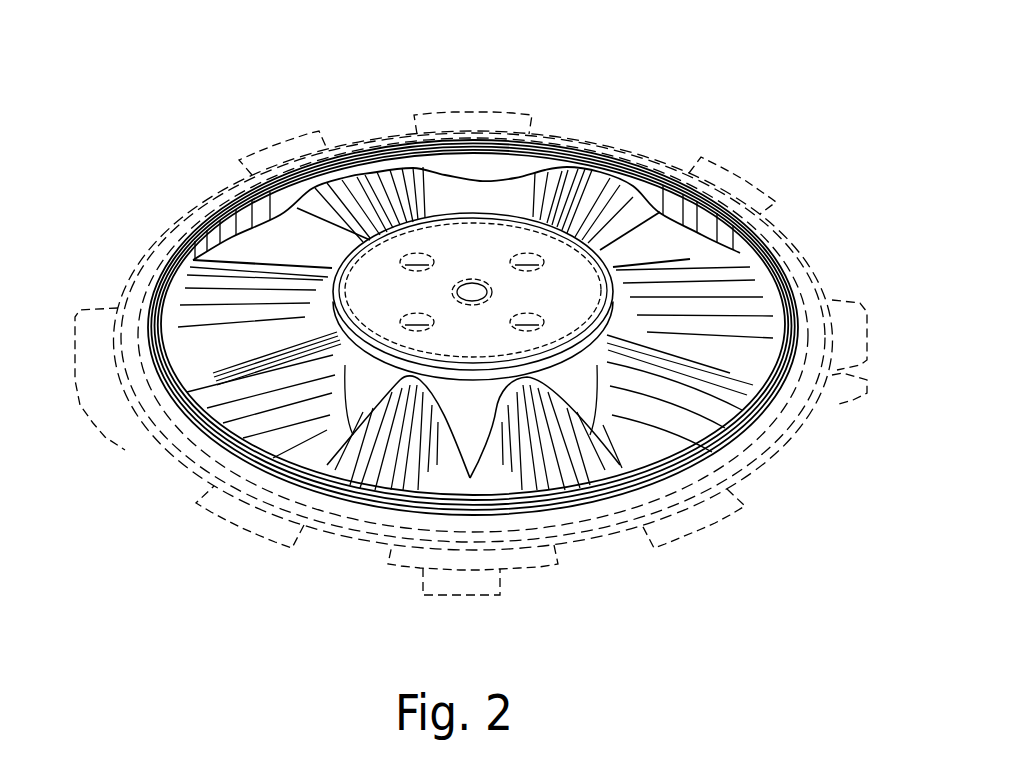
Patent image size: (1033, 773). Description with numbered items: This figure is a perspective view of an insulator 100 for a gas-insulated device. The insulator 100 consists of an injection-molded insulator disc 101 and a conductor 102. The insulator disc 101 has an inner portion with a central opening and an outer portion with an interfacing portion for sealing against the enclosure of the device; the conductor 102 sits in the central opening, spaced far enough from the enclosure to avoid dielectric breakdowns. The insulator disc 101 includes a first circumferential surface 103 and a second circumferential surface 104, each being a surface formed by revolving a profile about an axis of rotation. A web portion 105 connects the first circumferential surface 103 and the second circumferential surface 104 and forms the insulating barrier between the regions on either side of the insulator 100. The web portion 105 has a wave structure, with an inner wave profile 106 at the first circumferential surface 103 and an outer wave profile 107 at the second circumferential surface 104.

The insulator 100 is at (700, 80).
The insulator disc 101 is at (288, 175).
The conductor 102 is at (464, 251).
The first circumferential surface 103 is at (467, 432).
The second circumferential surface 104 is at (482, 170).
The web portion 105 is at (653, 433).
The inner wave profile 106 is at (497, 432).
The outer wave profile 107 is at (697, 200).